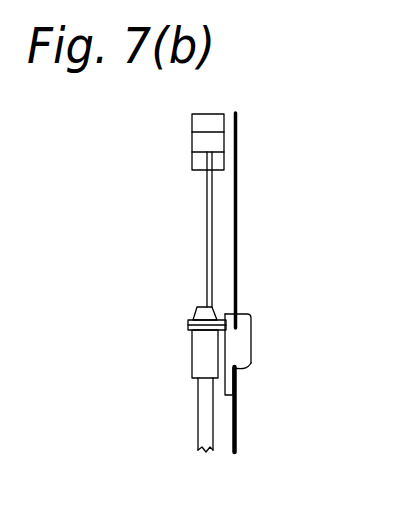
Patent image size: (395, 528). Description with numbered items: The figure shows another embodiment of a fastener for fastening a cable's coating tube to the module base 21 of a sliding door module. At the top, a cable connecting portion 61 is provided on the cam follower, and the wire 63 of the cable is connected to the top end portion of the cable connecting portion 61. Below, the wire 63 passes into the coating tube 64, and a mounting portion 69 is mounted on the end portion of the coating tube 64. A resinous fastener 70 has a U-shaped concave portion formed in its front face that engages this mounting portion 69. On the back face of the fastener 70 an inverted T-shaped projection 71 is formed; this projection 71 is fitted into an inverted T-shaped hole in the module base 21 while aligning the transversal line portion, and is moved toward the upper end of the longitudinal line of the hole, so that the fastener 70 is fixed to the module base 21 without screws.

The cable connecting portion 61 is at (201, 124).
The wire 63 is at (206, 219).
The module base 21 is at (238, 221).
The inverted T-shaped projection 71 is at (246, 314).
The resinous fastener 70 is at (247, 366).
The mounting portion 69 is at (203, 360).
The coating tube 64 is at (200, 427).